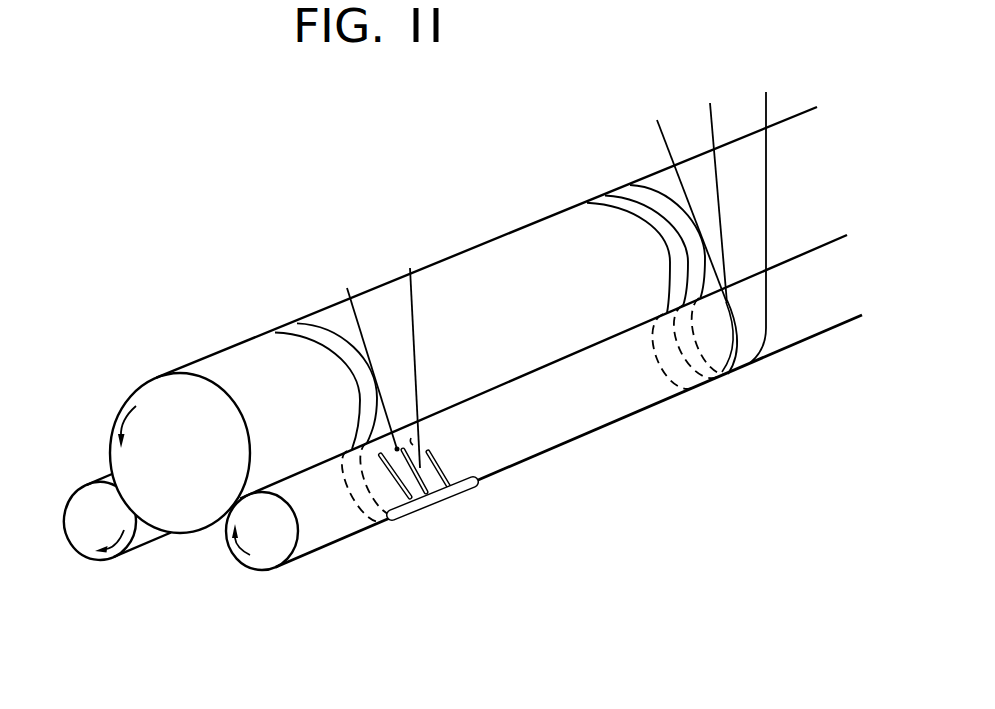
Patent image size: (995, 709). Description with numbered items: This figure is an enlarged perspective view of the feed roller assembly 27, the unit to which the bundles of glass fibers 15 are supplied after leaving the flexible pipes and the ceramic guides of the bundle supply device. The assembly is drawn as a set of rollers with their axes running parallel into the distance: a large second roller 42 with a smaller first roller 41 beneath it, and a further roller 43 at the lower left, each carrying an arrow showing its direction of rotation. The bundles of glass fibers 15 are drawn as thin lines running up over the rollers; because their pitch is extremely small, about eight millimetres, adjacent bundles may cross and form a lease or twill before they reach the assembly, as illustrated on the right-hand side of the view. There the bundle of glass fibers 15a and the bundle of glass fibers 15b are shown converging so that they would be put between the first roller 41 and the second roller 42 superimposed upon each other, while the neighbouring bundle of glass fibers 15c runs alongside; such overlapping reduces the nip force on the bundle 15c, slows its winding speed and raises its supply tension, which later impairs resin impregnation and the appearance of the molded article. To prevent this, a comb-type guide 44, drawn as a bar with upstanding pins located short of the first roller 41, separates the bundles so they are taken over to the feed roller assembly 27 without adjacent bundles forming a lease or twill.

The feed roller assembly 27 is at (170, 306).
The second roller 42 is at (155, 395).
The feed roller 43 is at (110, 557).
The first roller 41 is at (267, 565).
The comb-type guide 44 is at (446, 497).
The bundles of glass fibers 15 is at (415, 316).
The bundle of glass fibers 15a is at (664, 140).
The bundle of glass fibers 15b is at (711, 122).
The bundle of glass fibers 15c is at (767, 108).